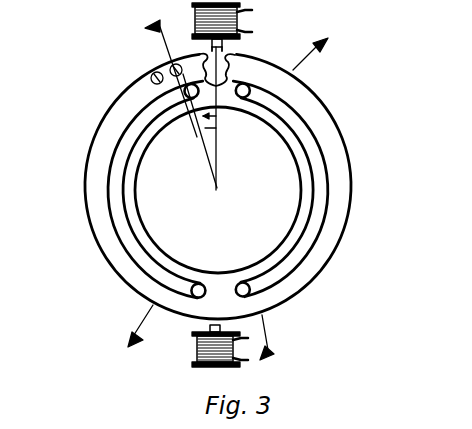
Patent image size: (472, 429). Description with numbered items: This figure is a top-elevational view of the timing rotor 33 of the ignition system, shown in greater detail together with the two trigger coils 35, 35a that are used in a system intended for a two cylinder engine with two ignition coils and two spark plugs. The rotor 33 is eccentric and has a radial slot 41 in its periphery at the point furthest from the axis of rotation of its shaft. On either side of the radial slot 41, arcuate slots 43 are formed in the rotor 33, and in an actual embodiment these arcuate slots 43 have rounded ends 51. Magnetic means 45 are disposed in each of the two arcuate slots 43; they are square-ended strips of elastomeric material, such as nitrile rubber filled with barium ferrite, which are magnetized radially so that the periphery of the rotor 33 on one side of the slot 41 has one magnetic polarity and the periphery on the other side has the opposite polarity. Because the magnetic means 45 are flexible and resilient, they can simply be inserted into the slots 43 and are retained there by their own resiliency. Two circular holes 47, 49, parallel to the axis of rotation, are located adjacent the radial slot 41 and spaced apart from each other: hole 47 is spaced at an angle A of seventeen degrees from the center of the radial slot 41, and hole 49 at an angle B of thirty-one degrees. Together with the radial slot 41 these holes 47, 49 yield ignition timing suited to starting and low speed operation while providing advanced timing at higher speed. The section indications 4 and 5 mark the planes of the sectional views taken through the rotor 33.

The rotor 33 is at (338, 150).
The trigger coil 35 is at (246, 26).
The trigger coil 35a is at (198, 344).
The radial slot 41 is at (236, 55).
The arcuate slots 43 is at (243, 297).
The magnetic means 45 is at (112, 165).
The hole 47 is at (172, 64).
The hole 49 is at (151, 78).
The rounded ends 51 is at (218, 90).
The section line 4- 4 is at (231, 199).
The section line 5- 5 is at (214, 187).
The angle A is at (215, 117).
The angle B is at (216, 132).